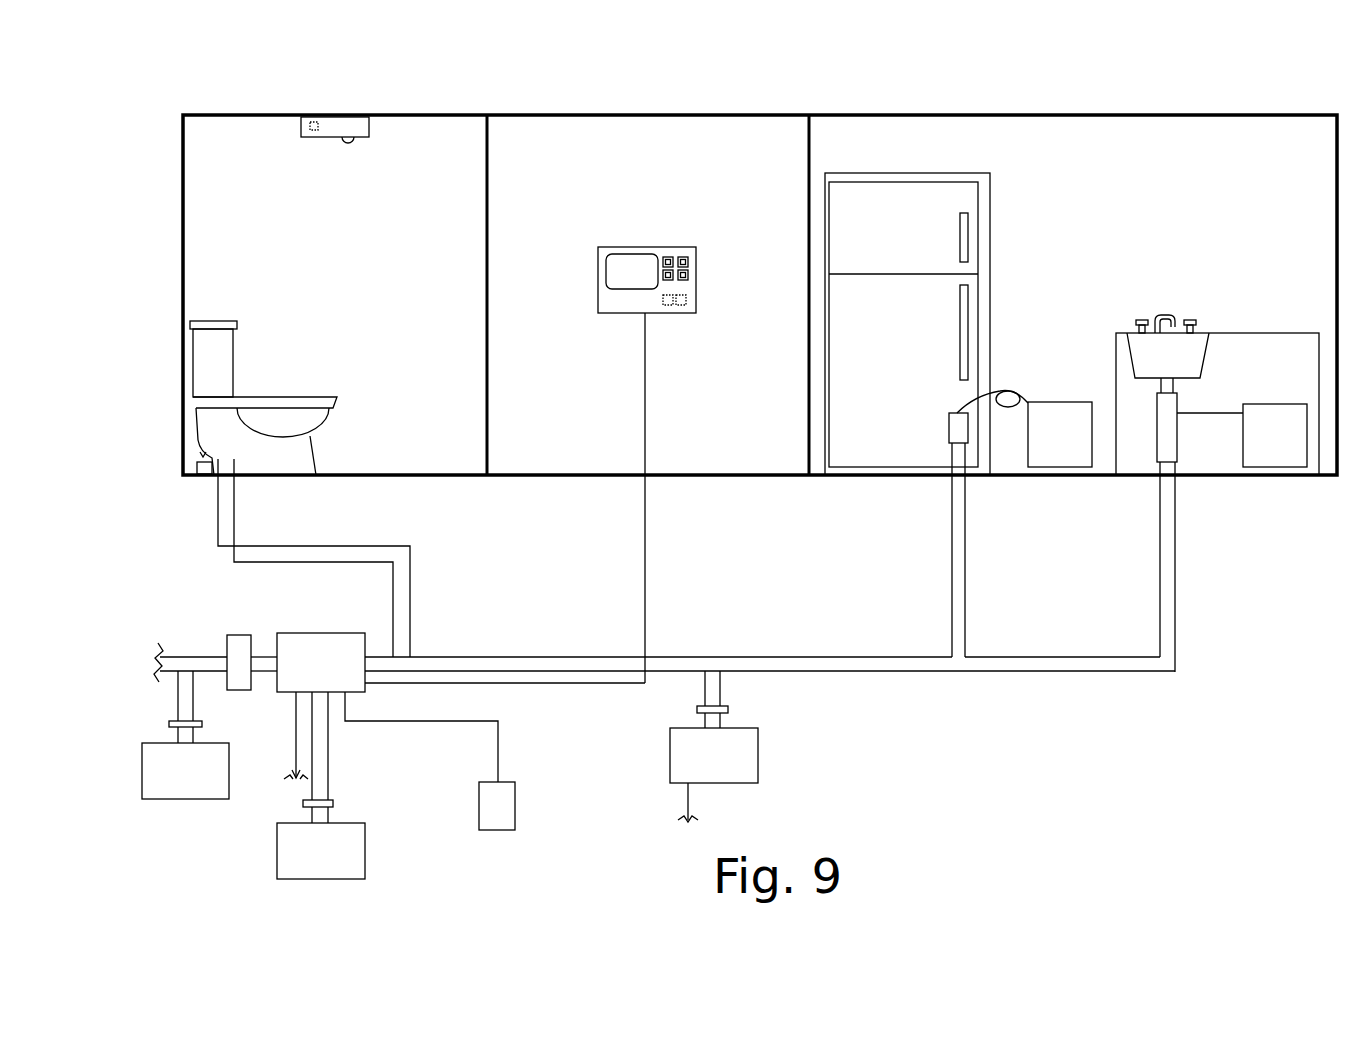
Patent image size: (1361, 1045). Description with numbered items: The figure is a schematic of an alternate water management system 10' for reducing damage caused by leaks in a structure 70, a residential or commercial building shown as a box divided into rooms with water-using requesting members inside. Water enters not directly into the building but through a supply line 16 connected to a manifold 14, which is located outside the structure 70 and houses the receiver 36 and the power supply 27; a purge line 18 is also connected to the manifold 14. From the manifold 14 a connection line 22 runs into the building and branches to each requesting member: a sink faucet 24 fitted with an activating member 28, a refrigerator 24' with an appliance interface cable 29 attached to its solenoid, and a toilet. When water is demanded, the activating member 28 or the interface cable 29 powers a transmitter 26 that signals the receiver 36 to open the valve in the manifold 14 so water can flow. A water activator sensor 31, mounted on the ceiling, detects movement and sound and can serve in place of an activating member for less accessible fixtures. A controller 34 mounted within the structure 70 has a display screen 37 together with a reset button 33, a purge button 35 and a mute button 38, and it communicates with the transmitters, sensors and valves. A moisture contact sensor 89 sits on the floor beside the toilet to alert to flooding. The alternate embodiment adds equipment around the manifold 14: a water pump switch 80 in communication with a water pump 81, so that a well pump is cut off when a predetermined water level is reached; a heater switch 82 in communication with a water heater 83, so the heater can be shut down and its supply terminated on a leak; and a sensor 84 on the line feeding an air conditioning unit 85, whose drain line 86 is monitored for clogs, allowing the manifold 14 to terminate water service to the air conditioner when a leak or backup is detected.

The water management system 10' is at (739, 459).
The structure 70 is at (1193, 112).
The water activator sensor 31 is at (334, 128).
The moisture contact sensor 89 is at (195, 465).
The controller 34 is at (598, 295).
The display screen 37 is at (617, 263).
The reset button 33 is at (667, 257).
The purge button 35 is at (690, 262).
The mute button 38 is at (690, 276).
The transmitter 26 is at (979, 381).
The receiver 36 is at (688, 308).
The requesting member 24' is at (943, 413).
The appliance interface cable 29 is at (1021, 389).
The requesting member 24 is at (1217, 467).
The activating member 28 is at (1178, 428).
The supply line 16 is at (195, 663).
The manifold 14 is at (288, 686).
The purge line 18 is at (293, 758).
The connection line 22 is at (520, 663).
The water pump switch 80 is at (203, 723).
The water pump 81 is at (187, 801).
The heater switch 82 is at (335, 803).
The water heater 83 is at (367, 852).
The power supply 27 is at (518, 803).
The sensor 84 is at (730, 710).
The air conditioning unit 85 is at (760, 757).
The drain line 86 is at (685, 803).